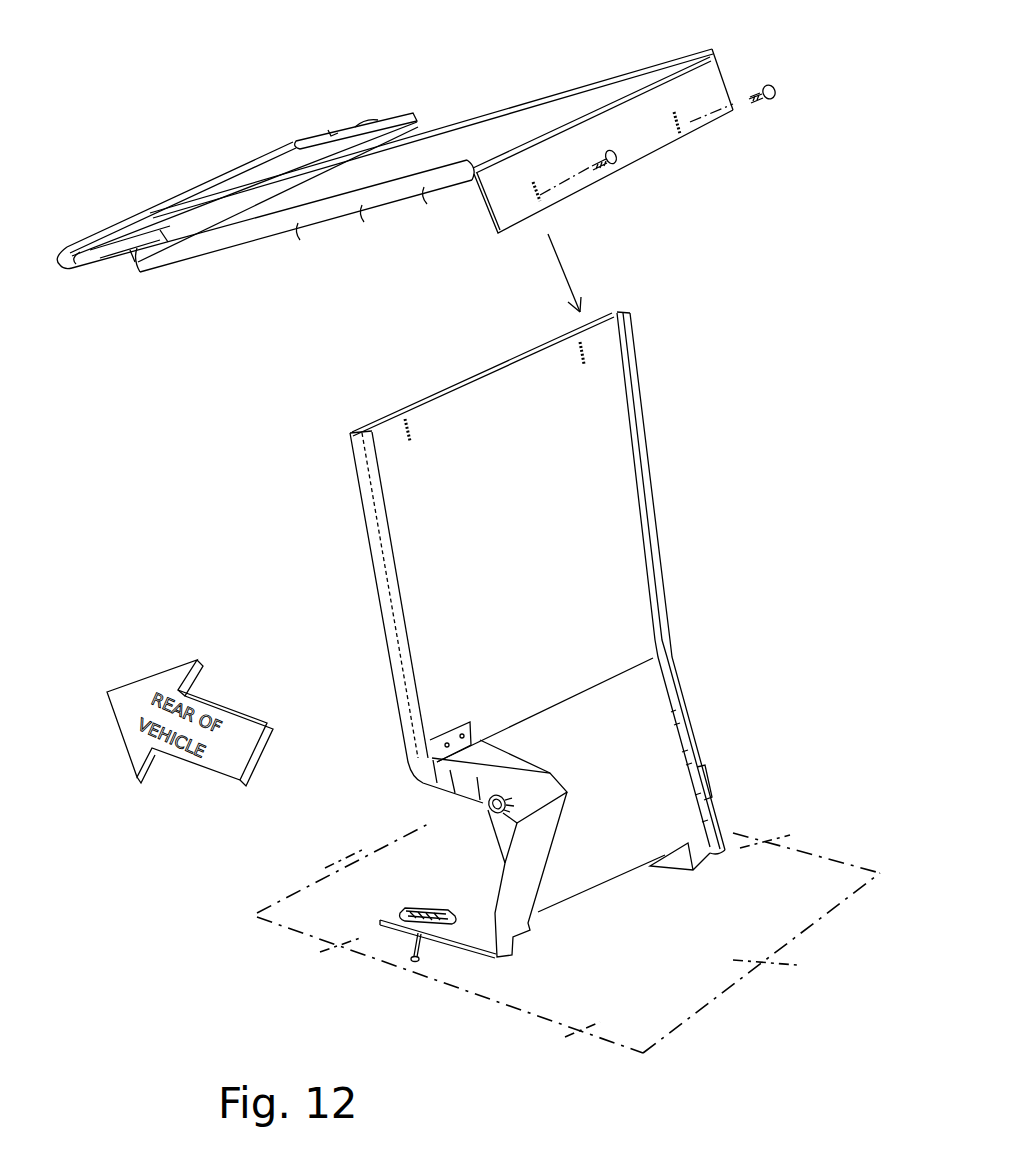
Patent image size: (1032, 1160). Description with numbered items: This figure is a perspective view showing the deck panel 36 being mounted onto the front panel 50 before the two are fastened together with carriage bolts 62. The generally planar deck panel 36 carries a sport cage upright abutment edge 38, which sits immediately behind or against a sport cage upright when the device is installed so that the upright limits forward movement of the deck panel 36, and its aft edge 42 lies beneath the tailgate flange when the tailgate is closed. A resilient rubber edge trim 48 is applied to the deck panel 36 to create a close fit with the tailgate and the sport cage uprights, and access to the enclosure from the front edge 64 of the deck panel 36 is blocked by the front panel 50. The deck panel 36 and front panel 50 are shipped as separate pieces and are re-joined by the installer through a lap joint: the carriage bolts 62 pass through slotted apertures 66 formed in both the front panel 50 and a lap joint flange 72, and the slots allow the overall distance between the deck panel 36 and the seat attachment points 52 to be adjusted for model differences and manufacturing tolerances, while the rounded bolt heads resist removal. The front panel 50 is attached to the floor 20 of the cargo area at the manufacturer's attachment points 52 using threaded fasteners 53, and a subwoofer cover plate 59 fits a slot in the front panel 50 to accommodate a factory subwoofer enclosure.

The floor 20 is at (440, 886).
The deck panel 36 is at (482, 128).
The sport cage upright abutment edge 38 is at (387, 197).
The aft edge 42 is at (312, 143).
The resilient rubber edge trim 48 is at (181, 193).
The front panel 50 is at (545, 644).
The attachment points 52 is at (418, 962).
The threaded fasteners 53 is at (412, 912).
The subwoofer cover plate 59 is at (526, 873).
The carriage bolts 62 is at (767, 82).
The front edge 64 is at (645, 80).
The slotted apertures 66 is at (681, 130).
The lap joint flange 72 is at (627, 139).